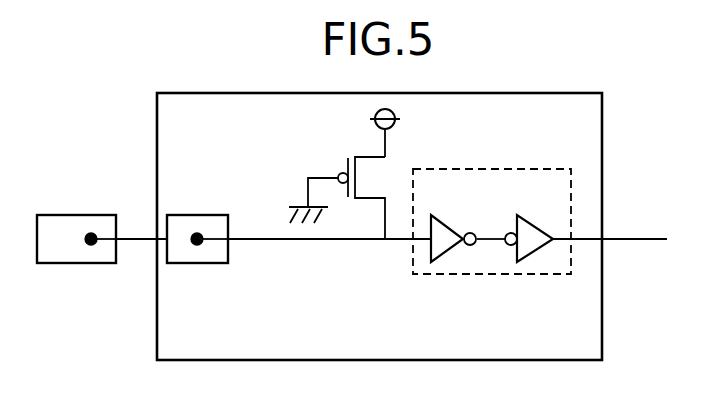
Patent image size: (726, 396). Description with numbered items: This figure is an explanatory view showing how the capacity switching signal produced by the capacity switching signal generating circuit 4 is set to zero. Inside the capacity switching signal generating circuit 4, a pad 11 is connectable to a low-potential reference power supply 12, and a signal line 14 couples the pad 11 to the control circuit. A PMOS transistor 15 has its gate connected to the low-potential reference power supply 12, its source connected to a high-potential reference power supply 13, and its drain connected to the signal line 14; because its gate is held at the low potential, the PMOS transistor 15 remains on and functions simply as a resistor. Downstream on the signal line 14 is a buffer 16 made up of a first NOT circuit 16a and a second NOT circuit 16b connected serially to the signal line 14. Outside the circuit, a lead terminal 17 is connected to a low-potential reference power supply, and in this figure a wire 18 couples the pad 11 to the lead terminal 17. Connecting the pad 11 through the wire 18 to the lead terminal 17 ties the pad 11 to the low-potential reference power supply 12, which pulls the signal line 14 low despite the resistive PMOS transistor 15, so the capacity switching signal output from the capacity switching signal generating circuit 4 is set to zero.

The capacity switching signal generating circuit 4 is at (239, 93).
The pad 11 is at (199, 215).
The low-potential reference power supply 12 is at (291, 207).
The high-potential reference power supply 13 is at (401, 121).
The signal line 14 is at (346, 242).
The PMOS transistor 15 is at (345, 157).
The buffer 16 is at (497, 169).
The first NOT circuit 16a is at (451, 223).
The second NOT circuit 16b is at (535, 223).
The lead terminal 17 is at (79, 215).
The wire 18 is at (136, 243).